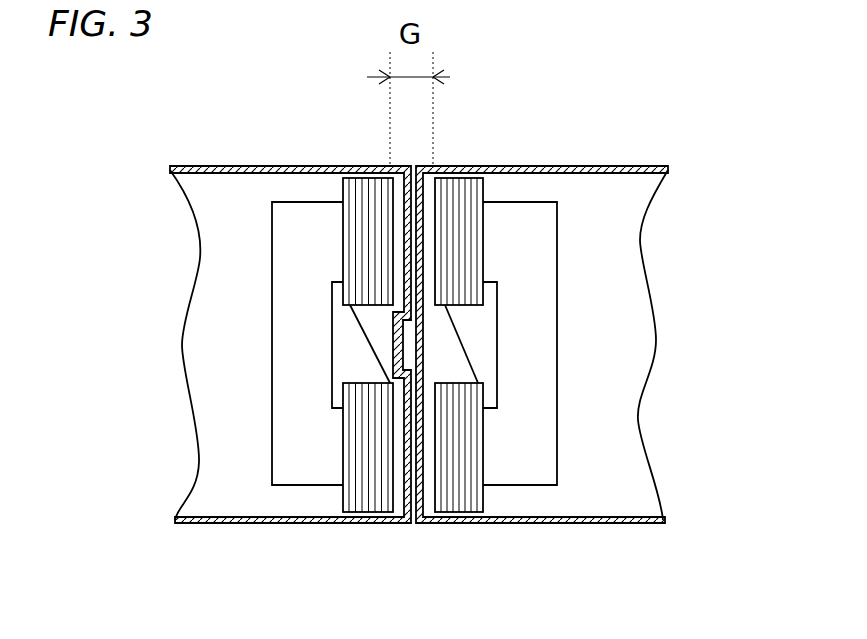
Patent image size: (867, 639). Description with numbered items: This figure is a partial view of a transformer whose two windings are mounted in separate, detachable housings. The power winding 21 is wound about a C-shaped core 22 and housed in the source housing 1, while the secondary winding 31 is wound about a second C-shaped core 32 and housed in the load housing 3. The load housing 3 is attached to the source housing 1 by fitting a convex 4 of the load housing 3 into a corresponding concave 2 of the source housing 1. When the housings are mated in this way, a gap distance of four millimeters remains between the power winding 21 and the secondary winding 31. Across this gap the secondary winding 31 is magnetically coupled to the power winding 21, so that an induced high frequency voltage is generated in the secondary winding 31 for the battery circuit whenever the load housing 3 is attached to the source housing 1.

The source housing 1 is at (221, 166).
The concave 2 is at (391, 358).
The power winding 21 is at (346, 192).
The C-shaped core 22 is at (272, 437).
The load housing 3 is at (632, 166).
The convex 4 is at (406, 350).
The secondary winding 31 is at (484, 190).
The C-shaped core 32 is at (557, 423).